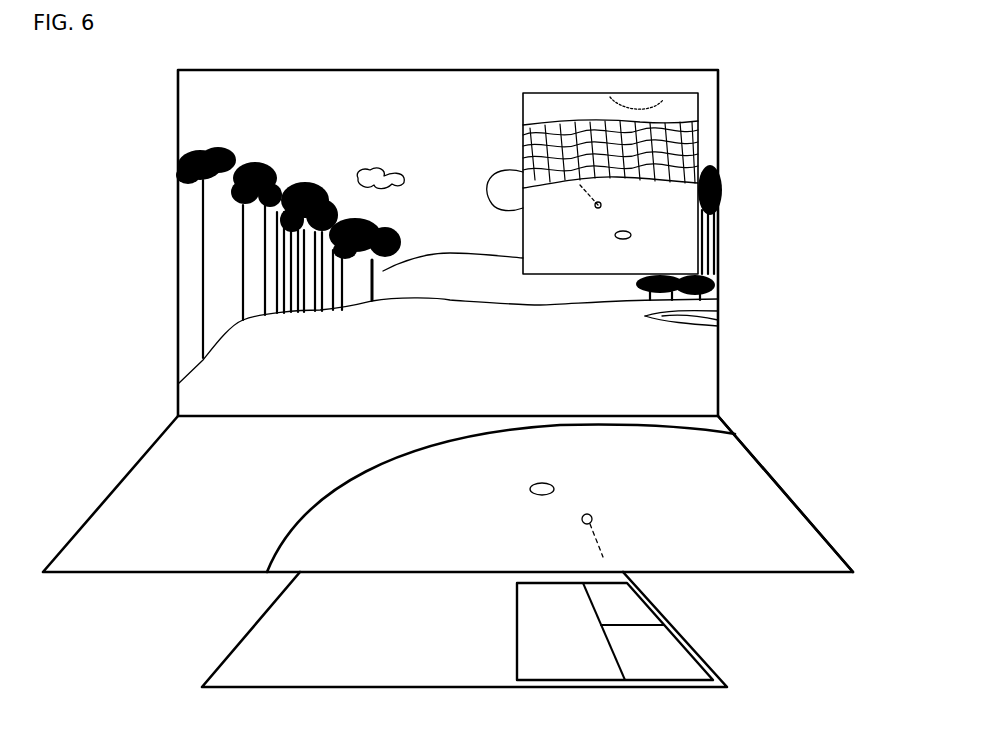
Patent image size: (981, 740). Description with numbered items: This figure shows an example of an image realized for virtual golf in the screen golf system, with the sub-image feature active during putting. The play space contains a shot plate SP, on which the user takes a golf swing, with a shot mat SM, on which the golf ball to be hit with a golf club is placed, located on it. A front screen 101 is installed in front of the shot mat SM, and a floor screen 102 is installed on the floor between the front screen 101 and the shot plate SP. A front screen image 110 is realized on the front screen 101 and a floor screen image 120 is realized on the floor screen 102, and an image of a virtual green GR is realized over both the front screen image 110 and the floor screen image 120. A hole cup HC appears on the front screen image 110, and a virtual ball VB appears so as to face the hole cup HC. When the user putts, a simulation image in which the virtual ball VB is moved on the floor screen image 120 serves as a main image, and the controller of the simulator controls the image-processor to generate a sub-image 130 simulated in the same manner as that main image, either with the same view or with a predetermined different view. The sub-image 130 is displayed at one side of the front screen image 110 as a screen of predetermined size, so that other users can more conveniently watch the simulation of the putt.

The front screen 101 is at (718, 75).
The front screen image 110 is at (198, 121).
The sub-image 130 is at (672, 232).
The floor screen 102 is at (748, 445).
The floor screen image 120 is at (780, 502).
The virtual green GR is at (390, 492).
The hole cup HC is at (553, 485).
The virtual ball VB is at (591, 513).
The shot plate SP is at (283, 627).
The shot mat SM is at (512, 620).